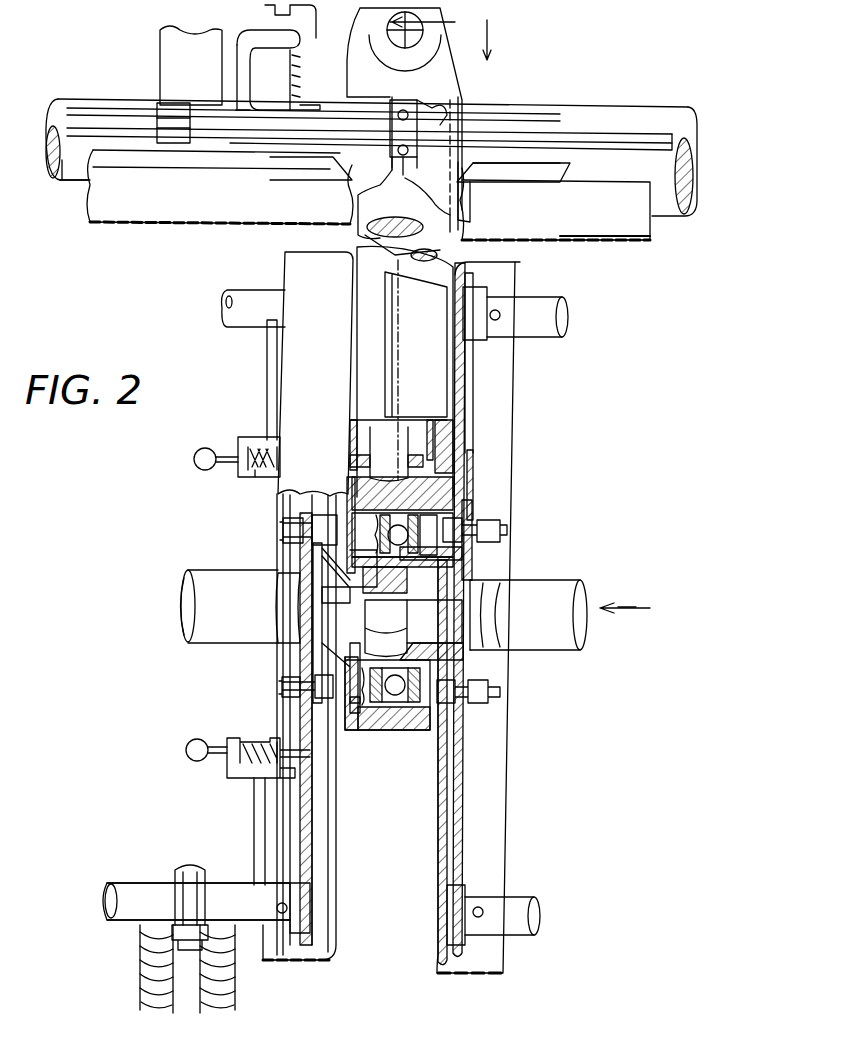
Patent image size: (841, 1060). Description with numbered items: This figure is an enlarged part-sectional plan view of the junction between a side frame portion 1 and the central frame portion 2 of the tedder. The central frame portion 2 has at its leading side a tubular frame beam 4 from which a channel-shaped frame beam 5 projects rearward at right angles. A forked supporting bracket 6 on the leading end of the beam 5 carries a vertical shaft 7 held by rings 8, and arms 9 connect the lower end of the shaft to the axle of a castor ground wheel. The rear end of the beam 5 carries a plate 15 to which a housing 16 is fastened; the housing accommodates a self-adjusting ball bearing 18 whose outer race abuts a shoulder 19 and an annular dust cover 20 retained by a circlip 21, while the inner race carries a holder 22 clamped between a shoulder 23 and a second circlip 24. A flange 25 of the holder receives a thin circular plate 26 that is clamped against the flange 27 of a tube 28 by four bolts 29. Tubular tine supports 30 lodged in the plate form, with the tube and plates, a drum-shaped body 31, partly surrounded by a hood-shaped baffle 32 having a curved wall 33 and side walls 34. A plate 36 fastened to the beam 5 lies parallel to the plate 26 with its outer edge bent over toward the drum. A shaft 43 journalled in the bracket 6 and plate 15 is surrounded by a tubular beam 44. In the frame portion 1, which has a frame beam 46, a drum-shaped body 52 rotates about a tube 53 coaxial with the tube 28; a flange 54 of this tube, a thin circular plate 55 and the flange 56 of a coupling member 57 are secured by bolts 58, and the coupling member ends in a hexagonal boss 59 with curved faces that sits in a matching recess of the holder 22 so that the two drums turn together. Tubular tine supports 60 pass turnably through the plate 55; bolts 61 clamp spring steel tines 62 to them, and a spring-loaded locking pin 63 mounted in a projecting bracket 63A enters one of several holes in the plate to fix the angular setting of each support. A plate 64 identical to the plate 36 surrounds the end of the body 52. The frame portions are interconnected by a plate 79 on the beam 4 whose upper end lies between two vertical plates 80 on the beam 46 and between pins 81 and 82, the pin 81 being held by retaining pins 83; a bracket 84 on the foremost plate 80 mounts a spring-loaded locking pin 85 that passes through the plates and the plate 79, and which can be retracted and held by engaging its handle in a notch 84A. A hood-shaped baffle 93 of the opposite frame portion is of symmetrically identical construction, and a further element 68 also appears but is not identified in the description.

The frame portion 1 is at (67, 92).
The central frame portion 2 is at (678, 101).
The frame beam 4 is at (565, 107).
The frame beam 5 is at (460, 118).
The forked supporting bracket 6 is at (465, 72).
The vertical shaft 7 is at (420, 45).
The rings 8 is at (440, 40).
The arms 9 is at (348, 30).
The plate 15 is at (455, 470).
The housing 16 is at (455, 492).
The self-adjusting ball bearing 18 is at (392, 730).
The shoulder 19 is at (418, 730).
The annular dust cover 20 is at (380, 730).
The circlip 21 is at (365, 730).
The holder 22 is at (447, 560).
The shoulder 23 is at (418, 560).
The second circlip 24 is at (405, 660).
The flange 25 is at (462, 515).
The thin circular plate 26 is at (476, 438).
The flange 27 is at (472, 565).
The tube 28 is at (552, 650).
The bolts 29 is at (507, 530).
The tubular tine supports 30 is at (560, 342).
The drum-shaped body 31 is at (528, 937).
The hood-shaped baffle 32 is at (640, 248).
The curved wall 33 is at (590, 250).
The side walls 34 is at (468, 208).
The plate 36 is at (516, 400).
The shaft 43 is at (355, 214).
The tubular beam 44 is at (438, 262).
The frame beam 46 is at (60, 182).
The drum-shaped body 52 is at (130, 875).
The tube 53 is at (212, 566).
The flange 54 is at (290, 555).
The thin circular plate 55 is at (310, 848).
The flange 56 is at (310, 713).
The coupling member 57 is at (320, 608).
The bolts 58 is at (280, 528).
The boss 59 is at (408, 612).
The tubular tine supports 60 is at (240, 326).
The bolts 61 is at (195, 870).
The spring steel tines 62 is at (236, 1003).
The spring-loaded locking pin 63 is at (193, 464).
The projecting bracket 63A is at (267, 400).
The plate 64 is at (337, 950).
The block 68 is at (160, 48).
The plate 79 is at (627, 136).
The vertical plates 80 is at (104, 114).
The pin 81 is at (428, 110).
The pin 82 is at (170, 106).
The retaining pins 83 is at (408, 100).
The bracket 84 is at (258, 58).
The notch 84A is at (275, 10).
The spring-loaded locking pin 85 is at (336, 45).
The hood-shaped baffle 93 is at (135, 226).